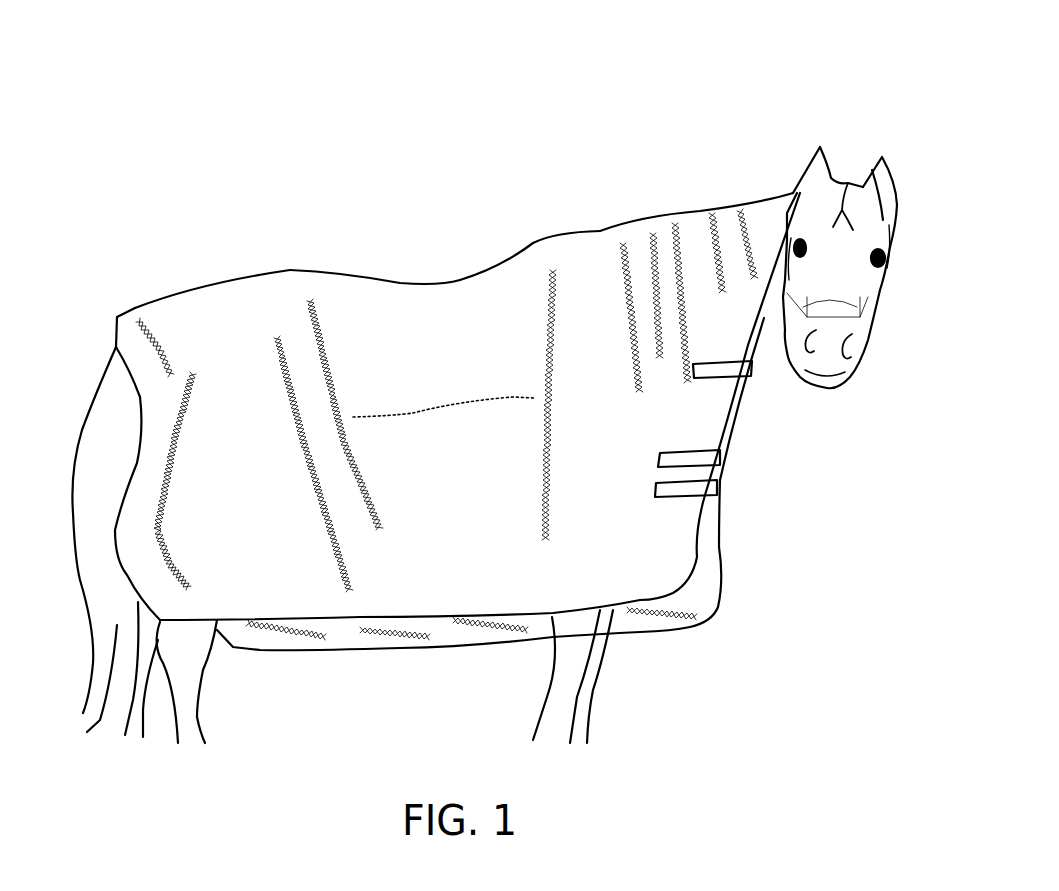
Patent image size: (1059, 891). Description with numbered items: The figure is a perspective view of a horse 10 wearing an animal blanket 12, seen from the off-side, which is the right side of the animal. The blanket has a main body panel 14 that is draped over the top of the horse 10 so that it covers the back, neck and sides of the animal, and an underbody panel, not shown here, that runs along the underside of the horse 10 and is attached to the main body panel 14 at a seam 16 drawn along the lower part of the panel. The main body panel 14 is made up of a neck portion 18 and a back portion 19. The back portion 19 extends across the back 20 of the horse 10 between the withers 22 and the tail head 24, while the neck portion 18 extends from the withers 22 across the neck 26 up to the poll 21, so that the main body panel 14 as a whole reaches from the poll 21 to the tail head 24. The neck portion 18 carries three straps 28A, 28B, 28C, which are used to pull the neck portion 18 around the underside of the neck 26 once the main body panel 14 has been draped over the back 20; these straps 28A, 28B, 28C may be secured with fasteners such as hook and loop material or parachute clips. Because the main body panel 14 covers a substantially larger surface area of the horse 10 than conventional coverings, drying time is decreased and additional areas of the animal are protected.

The horse 10 is at (852, 160).
The animal blanket 12 is at (475, 365).
The main body panel 14 is at (509, 325).
The seam 16 is at (432, 410).
The neck portion 18 is at (693, 247).
The back portion 19 is at (308, 278).
The back 20 is at (463, 278).
The poll 21 is at (792, 193).
The withers 22 is at (603, 230).
The tail head 24 is at (128, 310).
The neck 26 is at (732, 206).
The strap 28A is at (718, 370).
The strap 28B is at (697, 453).
The strap 28C is at (683, 488).